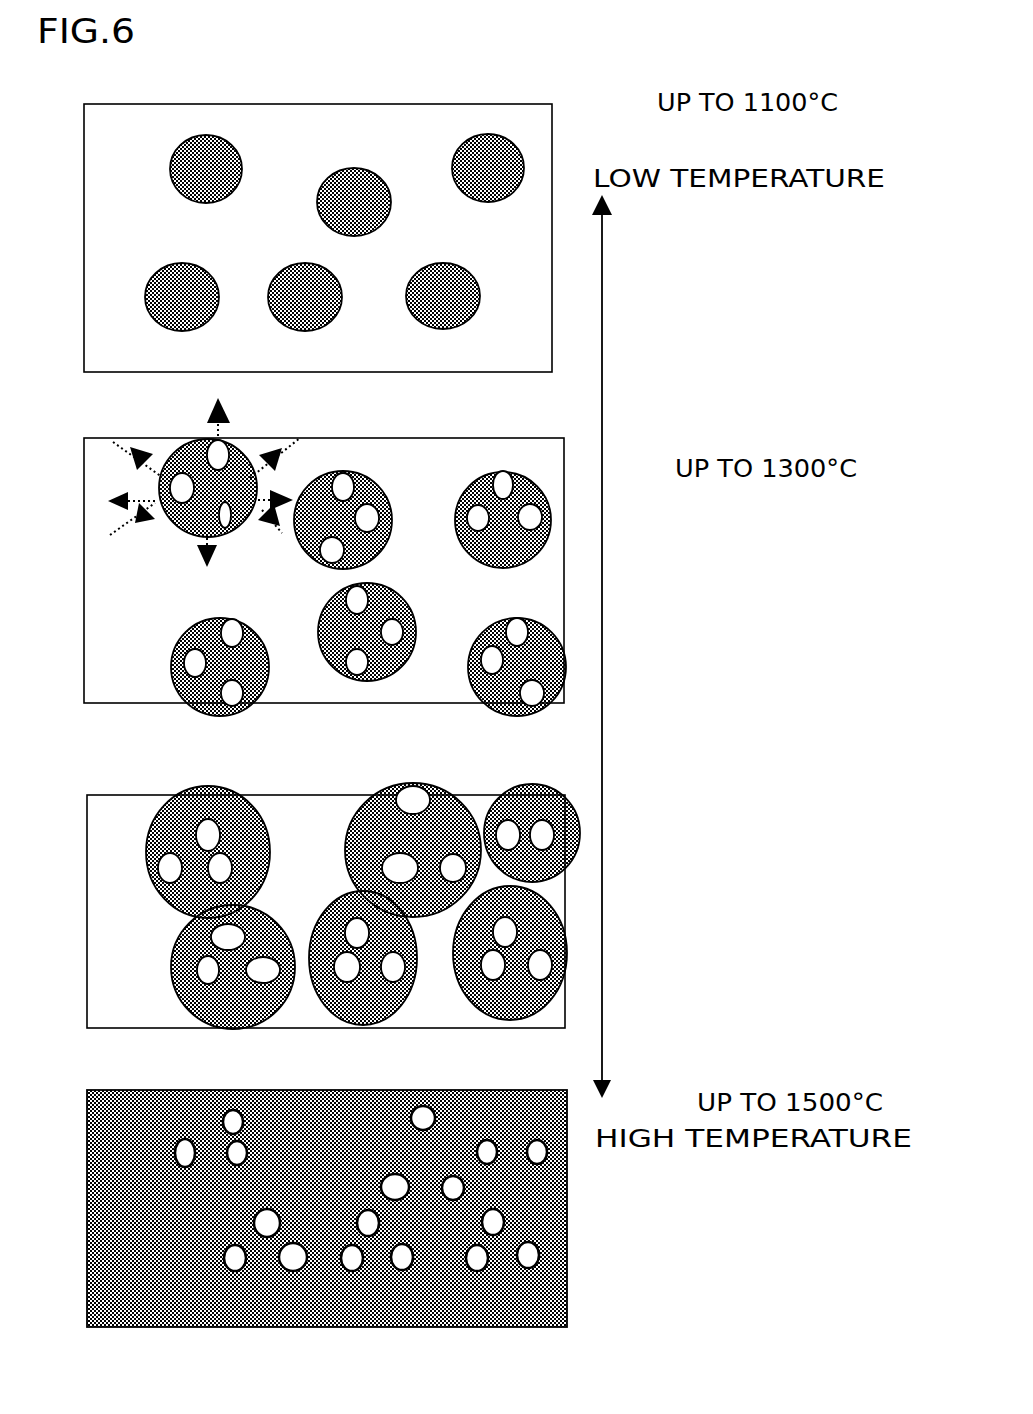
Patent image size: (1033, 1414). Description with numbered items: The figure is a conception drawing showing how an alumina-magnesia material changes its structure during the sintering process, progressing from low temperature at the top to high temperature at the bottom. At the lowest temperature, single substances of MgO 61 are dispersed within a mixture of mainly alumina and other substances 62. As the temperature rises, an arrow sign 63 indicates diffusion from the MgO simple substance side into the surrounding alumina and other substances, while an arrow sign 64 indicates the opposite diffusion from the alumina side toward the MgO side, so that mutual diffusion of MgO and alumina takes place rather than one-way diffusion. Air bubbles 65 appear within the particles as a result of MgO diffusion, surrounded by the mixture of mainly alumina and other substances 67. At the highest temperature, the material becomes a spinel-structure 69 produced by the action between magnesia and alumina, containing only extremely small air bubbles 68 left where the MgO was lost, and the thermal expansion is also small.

The single substance of MgO 61 is at (213, 137).
The mixture of mainly alumina and other substances 62 is at (373, 73).
The arrow sign indicating diffusion from MgO to alumina 63 is at (227, 414).
The arrow sign indicating diffusion from alumina to MgO 64 is at (128, 437).
The air bubble 65 is at (353, 480).
The mixture of mainly alumina and other substances 67 is at (430, 465).
The air bubble 68 is at (243, 1113).
The spinel-structure 69 is at (330, 1137).